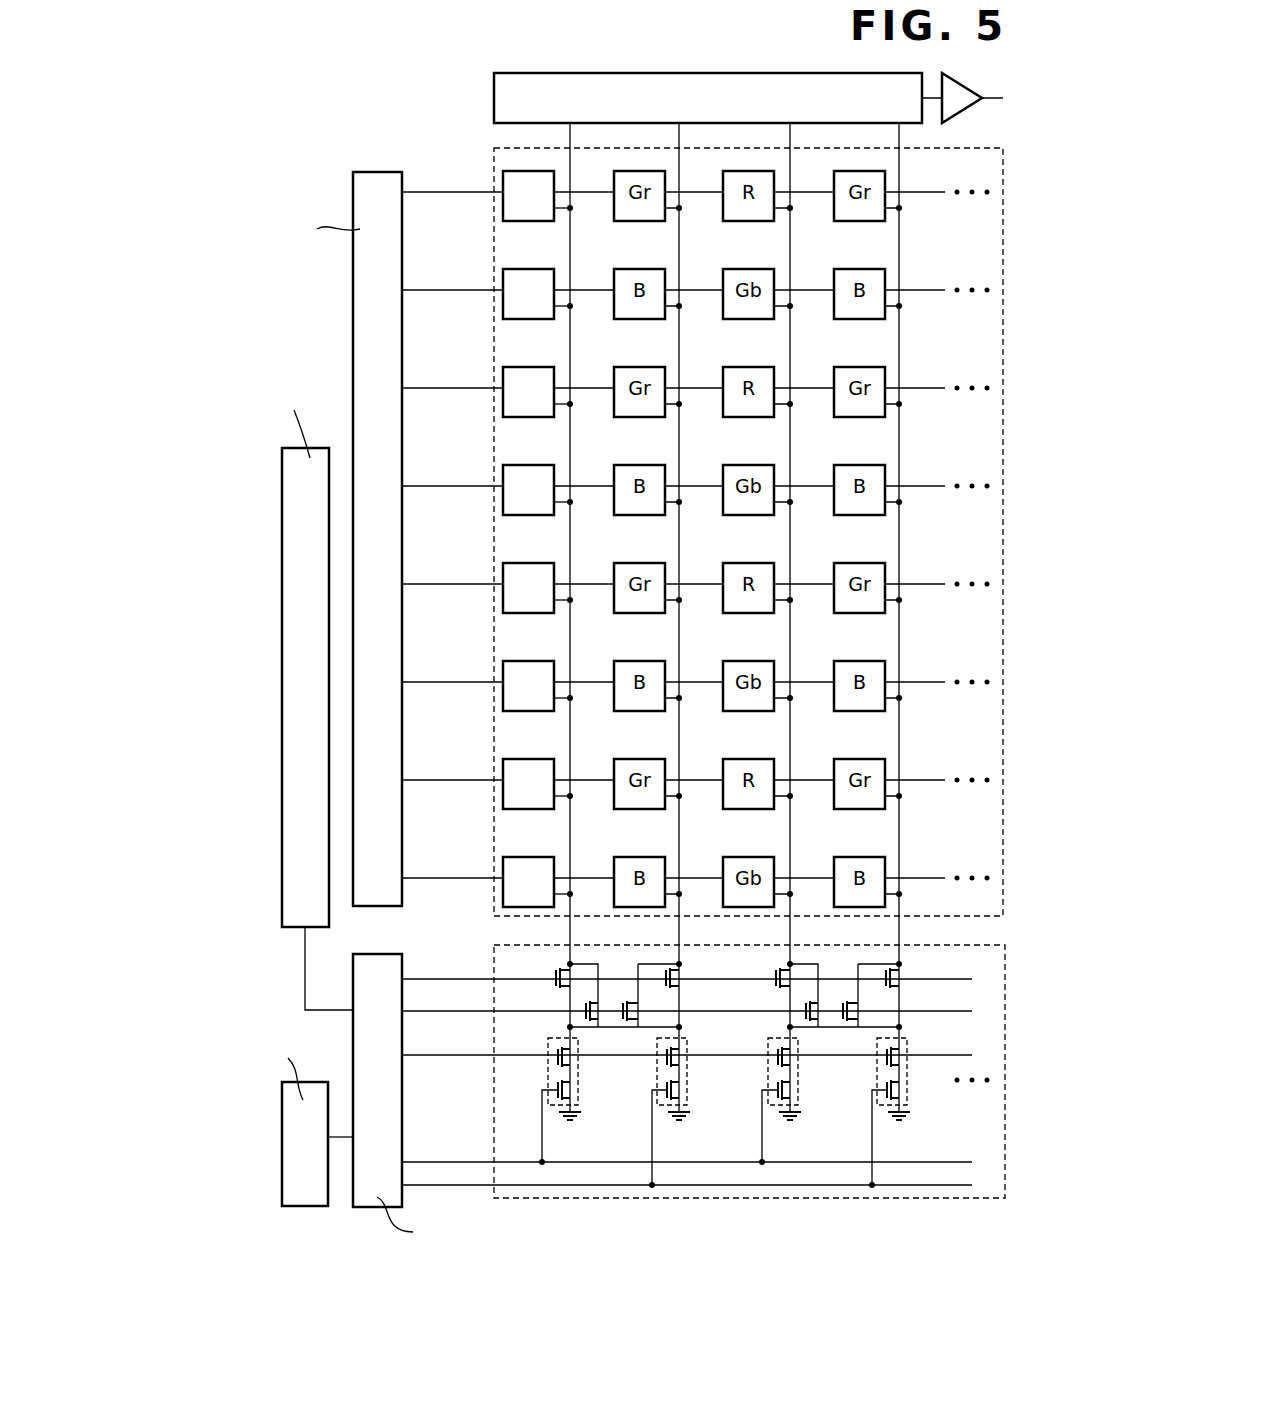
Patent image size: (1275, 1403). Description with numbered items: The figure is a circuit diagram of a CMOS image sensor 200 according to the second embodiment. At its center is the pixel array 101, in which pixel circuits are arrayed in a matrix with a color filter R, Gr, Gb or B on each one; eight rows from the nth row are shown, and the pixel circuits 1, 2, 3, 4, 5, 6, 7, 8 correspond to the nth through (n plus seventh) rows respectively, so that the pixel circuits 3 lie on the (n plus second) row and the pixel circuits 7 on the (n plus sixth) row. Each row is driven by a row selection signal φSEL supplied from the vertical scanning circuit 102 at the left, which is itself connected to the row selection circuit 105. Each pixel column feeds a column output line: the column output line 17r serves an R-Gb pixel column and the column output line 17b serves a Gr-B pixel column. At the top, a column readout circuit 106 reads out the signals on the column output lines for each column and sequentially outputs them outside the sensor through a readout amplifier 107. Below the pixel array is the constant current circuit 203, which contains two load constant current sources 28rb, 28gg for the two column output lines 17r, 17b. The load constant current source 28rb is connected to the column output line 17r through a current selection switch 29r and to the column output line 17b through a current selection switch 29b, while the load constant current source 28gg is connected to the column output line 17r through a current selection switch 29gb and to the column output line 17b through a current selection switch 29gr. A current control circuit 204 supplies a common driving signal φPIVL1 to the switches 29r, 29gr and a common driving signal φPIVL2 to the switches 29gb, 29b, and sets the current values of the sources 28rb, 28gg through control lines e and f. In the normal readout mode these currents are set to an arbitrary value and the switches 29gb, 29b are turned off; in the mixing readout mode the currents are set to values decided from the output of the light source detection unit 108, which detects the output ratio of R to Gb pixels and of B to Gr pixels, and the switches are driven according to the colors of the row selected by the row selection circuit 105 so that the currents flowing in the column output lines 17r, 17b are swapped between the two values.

The CMOS image sensor 200 is at (362, 86).
The pixel array 101 is at (493, 160).
The vertical scanning circuit 102 is at (379, 539).
The row selection circuit 105 is at (308, 687).
The column readout circuit 106 is at (494, 96).
The readout amplifier 107 is at (964, 108).
The light source detection unit 108 is at (317, 1144).
The constant current circuit 203 is at (492, 1088).
The current control circuit 204 is at (378, 1080).
The pixel circuit 1 is at (540, 221).
The pixel circuit 2 is at (540, 319).
The pixel circuit 3 is at (540, 417).
The pixel circuit 4 is at (540, 515).
The pixel circuit 5 is at (540, 613).
The pixel circuit 6 is at (540, 711).
The pixel circuit 7 is at (548, 809).
The pixel circuit 8 is at (510, 856).
The column output line 17r is at (571, 930).
The column output line 17b is at (680, 930).
The current selection switch 29r is at (568, 964).
The current selection switch 29gb is at (592, 1000).
The current selection switch 29gr is at (681, 972).
The current selection switch 29b is at (637, 1007).
The load constant current source 28rb is at (580, 1097).
The load constant current source 28gg is at (689, 1097).